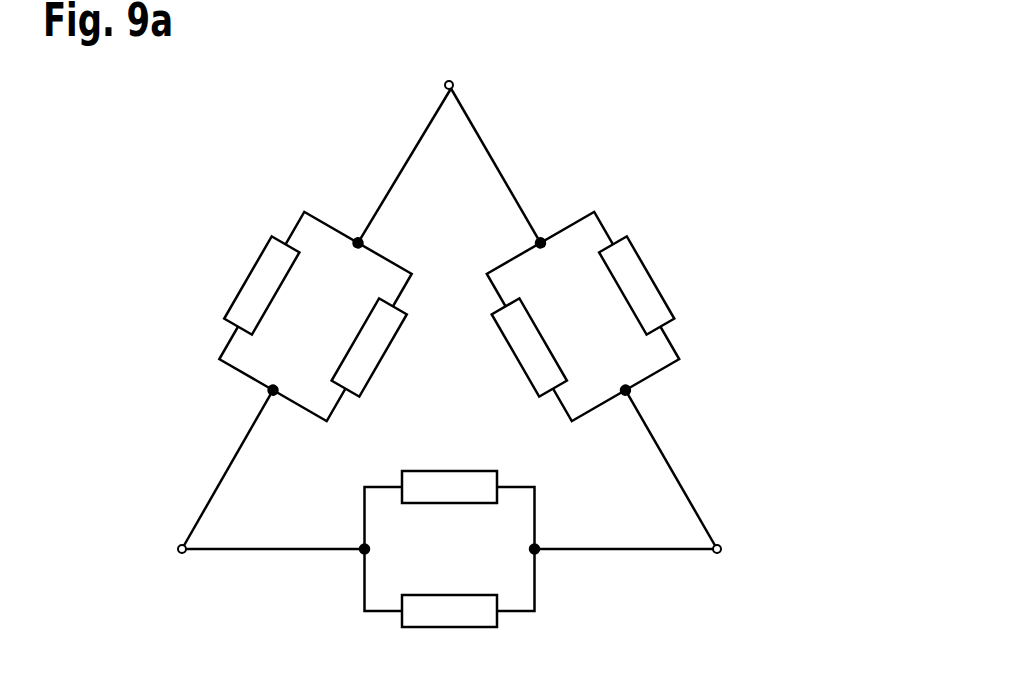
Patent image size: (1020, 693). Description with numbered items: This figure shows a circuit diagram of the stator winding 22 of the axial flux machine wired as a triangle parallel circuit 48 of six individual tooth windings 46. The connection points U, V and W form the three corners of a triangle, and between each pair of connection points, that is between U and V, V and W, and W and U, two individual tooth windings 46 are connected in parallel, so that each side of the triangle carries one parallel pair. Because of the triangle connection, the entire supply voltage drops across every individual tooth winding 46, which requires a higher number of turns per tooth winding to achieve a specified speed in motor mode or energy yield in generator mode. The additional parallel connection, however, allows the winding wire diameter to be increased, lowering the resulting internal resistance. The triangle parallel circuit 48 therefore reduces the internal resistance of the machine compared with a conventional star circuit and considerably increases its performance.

The stator winding 22 is at (449, 436).
The individual tooth winding 46 is at (257, 261).
The triangle parallel circuit 48 is at (656, 130).